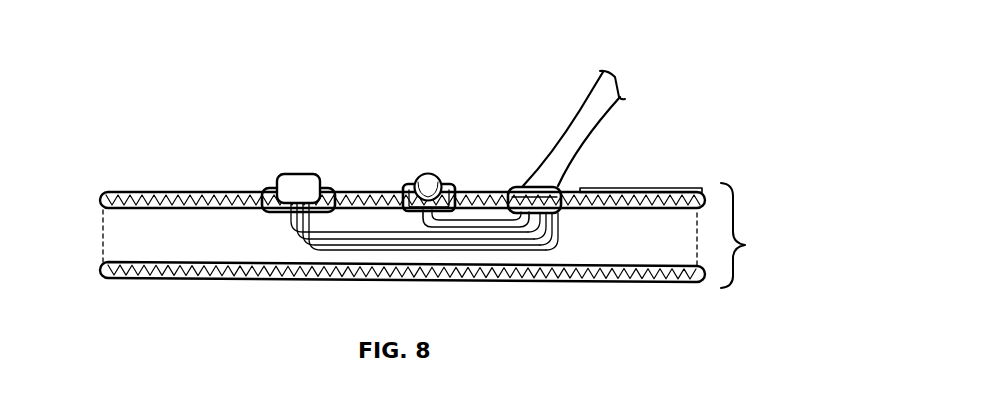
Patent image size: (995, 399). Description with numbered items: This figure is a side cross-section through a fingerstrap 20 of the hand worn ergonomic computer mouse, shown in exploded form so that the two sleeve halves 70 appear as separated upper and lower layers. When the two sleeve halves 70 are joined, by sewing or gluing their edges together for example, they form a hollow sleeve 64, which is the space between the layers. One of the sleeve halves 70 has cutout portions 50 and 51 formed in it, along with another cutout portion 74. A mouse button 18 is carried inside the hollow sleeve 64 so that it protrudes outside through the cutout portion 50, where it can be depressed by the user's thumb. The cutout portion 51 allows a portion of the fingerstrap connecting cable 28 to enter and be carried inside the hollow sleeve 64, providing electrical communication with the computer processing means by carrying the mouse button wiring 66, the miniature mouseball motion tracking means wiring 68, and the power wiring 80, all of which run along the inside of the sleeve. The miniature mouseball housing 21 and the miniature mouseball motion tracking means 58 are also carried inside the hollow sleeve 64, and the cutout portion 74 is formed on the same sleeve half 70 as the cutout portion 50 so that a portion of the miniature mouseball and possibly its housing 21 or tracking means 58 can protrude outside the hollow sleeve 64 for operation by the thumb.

The mouse button 18 is at (306, 174).
The fingerstrap 20 is at (749, 235).
The miniature mouseball housing 21 is at (447, 184).
The fingerstrap connecting cable 28 is at (565, 149).
The cutout portion 50 is at (265, 190).
The cutout portion 51 is at (514, 184).
The miniature mouseball motion tracking means 58 is at (412, 182).
The hollow sleeve 64 is at (170, 237).
The mouse button wiring 66 is at (320, 236).
The miniature mouseball motion tracking means wiring 68 is at (491, 215).
The sleeve half 70 is at (160, 192).
The cutout portion 74 is at (397, 186).
The power wiring 80 is at (540, 243).